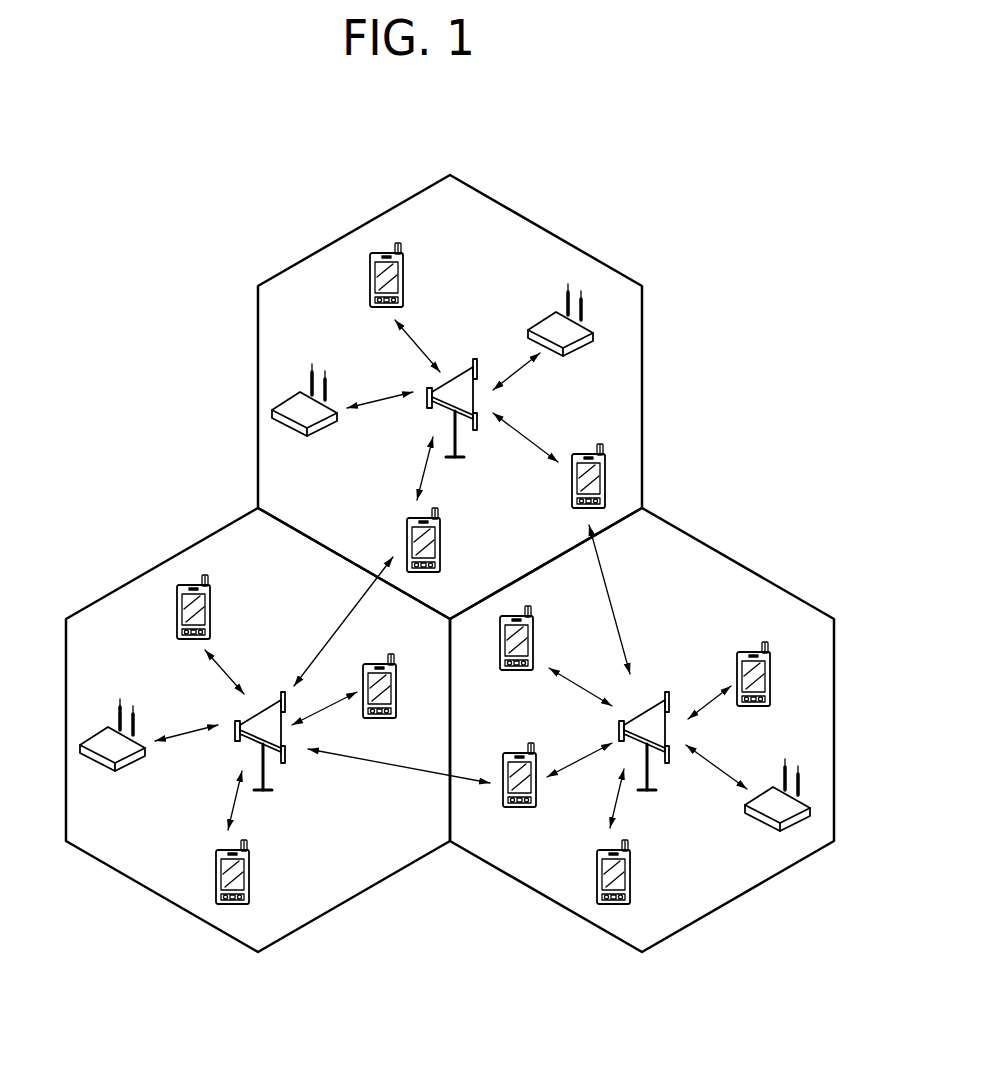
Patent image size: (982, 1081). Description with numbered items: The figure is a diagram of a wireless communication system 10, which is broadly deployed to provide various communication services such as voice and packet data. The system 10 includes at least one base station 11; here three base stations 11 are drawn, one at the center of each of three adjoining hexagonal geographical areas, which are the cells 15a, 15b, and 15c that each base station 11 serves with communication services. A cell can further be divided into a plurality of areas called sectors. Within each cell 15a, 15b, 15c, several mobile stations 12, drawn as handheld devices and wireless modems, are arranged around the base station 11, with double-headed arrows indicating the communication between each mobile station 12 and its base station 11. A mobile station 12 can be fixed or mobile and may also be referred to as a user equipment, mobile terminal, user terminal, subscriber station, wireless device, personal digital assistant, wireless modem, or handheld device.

The wireless communication system 10 is at (726, 290).
The base station 11 is at (464, 367).
The mobile station 12 is at (404, 278).
The cell 15a is at (642, 386).
The cell 15b is at (763, 572).
The cell 15c is at (137, 574).